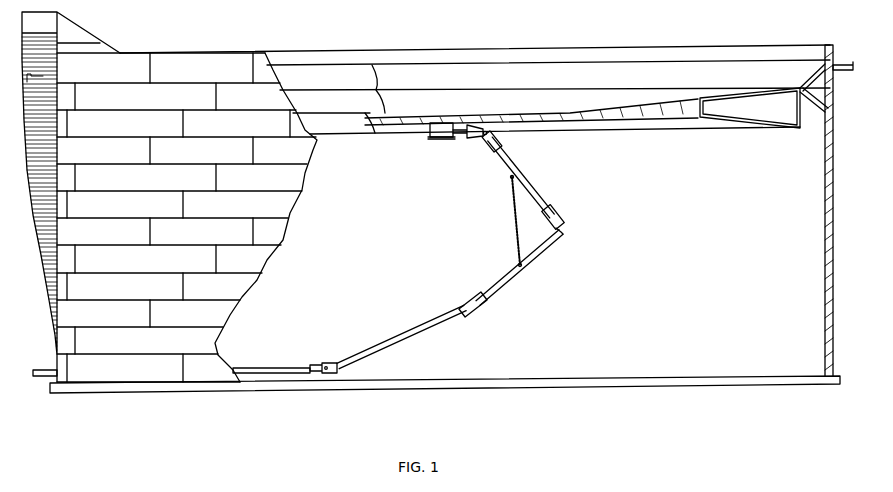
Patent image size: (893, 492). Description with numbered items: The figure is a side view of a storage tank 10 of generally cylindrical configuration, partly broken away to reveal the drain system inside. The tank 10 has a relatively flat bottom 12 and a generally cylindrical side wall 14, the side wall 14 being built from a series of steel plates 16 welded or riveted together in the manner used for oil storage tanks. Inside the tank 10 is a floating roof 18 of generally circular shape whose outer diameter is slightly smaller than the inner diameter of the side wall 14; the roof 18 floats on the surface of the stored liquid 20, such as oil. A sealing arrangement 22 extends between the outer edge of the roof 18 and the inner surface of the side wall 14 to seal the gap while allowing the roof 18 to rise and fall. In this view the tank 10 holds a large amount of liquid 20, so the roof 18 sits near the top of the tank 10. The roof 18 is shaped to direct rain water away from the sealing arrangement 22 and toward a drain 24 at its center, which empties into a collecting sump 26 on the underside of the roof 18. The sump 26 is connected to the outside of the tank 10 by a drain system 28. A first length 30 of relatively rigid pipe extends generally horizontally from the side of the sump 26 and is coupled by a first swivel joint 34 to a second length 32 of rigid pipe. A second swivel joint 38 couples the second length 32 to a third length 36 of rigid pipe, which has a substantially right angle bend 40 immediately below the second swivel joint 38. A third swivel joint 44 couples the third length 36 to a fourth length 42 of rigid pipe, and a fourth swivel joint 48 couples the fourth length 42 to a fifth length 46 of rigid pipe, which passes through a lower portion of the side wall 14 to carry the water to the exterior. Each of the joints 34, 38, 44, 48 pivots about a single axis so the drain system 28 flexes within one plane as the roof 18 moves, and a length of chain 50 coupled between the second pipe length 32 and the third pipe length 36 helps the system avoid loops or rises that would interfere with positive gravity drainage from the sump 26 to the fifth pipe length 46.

The storage tank 10 is at (835, 190).
The bottom 12 is at (658, 385).
The side wall 14 is at (836, 312).
The steel plates 16 is at (165, 62).
The floating roof 18 is at (566, 95).
The liquid 20 is at (702, 303).
The sealing arrangement 22 is at (803, 80).
The drain 24 is at (445, 122).
The collecting sump 26 is at (440, 139).
The drain system 28 is at (552, 200).
The first length of pipe 30 is at (470, 139).
The second length of pipe 32 is at (525, 183).
The first swivel joint 34 is at (492, 149).
The third length of pipe 36 is at (525, 270).
The second swivel joint 38 is at (563, 219).
The right angle bend 40 is at (566, 236).
The fourth length of pipe 42 is at (425, 331).
The third swivel joint 44 is at (482, 307).
The fifth length of pipe 46 is at (40, 368).
The fourth swivel joint 48 is at (331, 362).
The chain 50 is at (515, 226).